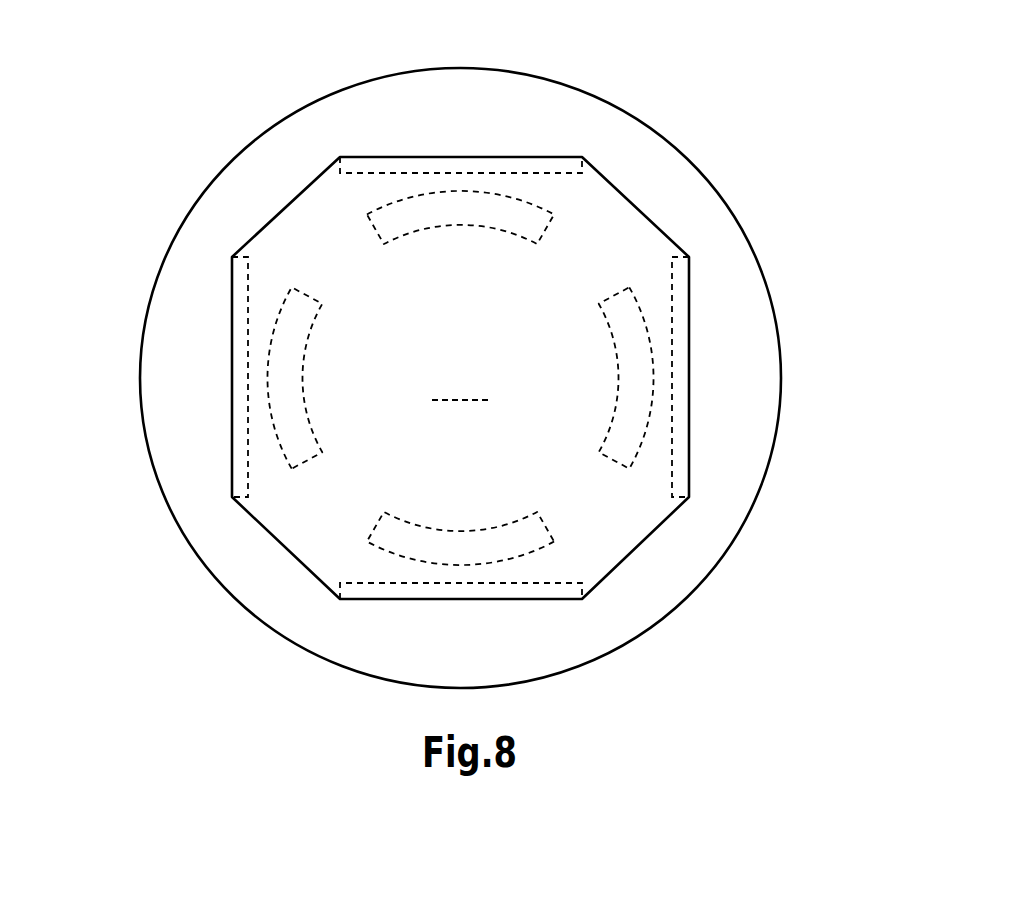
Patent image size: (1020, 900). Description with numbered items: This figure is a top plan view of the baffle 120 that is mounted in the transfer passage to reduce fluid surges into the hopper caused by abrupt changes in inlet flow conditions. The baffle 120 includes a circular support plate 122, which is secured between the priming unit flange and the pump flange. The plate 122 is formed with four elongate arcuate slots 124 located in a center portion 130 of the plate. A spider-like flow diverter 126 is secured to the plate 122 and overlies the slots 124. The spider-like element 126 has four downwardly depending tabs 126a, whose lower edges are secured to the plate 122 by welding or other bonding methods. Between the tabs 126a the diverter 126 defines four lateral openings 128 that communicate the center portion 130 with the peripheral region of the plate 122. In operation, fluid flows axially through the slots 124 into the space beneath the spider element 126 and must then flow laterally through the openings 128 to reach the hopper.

The baffle 120 is at (802, 250).
The support plate 122 is at (756, 409).
The arcuate slots 124 is at (408, 217).
The spider-like flow diverter 126 is at (475, 372).
The downwardly depending tabs 126a is at (467, 167).
The lateral openings 128 is at (275, 203).
The center portion 130 is at (460, 383).